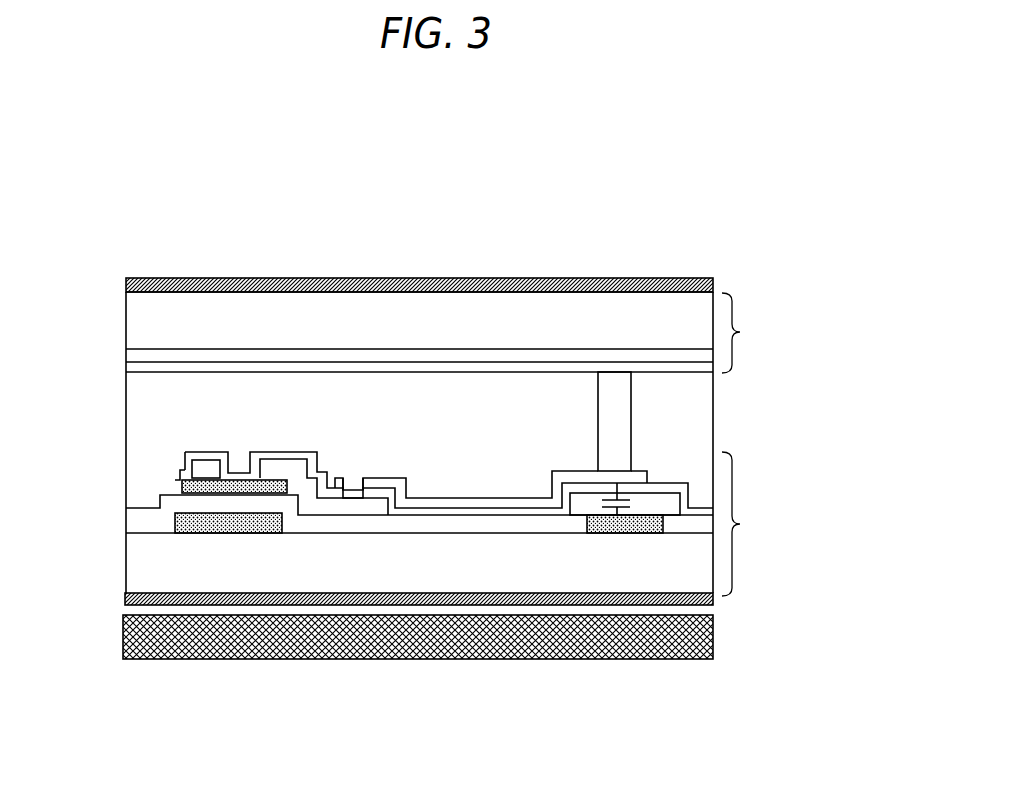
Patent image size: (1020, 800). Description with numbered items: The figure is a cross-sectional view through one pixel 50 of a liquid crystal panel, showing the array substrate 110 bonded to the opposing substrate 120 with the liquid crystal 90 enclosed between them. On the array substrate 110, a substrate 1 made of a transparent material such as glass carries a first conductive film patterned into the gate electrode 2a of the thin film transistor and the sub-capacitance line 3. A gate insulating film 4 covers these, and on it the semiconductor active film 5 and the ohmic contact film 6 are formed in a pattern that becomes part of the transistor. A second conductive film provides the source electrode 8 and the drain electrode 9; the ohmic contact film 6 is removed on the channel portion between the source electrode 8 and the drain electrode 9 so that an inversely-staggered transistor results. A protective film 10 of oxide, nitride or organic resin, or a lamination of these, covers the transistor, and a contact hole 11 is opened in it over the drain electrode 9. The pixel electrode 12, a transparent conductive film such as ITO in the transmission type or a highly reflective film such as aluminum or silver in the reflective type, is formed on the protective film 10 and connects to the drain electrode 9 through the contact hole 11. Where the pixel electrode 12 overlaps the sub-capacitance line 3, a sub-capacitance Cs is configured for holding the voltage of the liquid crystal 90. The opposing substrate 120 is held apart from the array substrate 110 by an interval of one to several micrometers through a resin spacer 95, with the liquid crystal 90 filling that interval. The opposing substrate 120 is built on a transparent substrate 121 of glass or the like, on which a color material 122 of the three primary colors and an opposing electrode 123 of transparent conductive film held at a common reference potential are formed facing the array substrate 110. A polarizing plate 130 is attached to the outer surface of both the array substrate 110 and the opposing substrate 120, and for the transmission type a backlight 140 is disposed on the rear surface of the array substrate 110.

The substrate 1 is at (357, 565).
The gate electrode 2a is at (234, 530).
The sub-capacitance line 3 is at (608, 533).
The gate insulating film 4 is at (148, 523).
The semiconductor active film 5 is at (205, 492).
The ohmic contact film 6 is at (181, 480).
The source electrode 8 is at (196, 462).
The drain electrode 9 is at (257, 453).
The protective film 10 is at (288, 460).
The contact hole 11 is at (356, 480).
The pixel electrode 12 is at (463, 498).
The sub-capacitance Cs is at (617, 499).
The pixel 50 is at (127, 598).
The liquid crystal 90 is at (706, 442).
The resin spacer 95 is at (632, 424).
The array substrate 110 is at (810, 534).
The opposing substrate 120 is at (810, 347).
The transparent substrate 121 is at (240, 334).
The color material 122 is at (343, 356).
The opposing electrode 123 is at (458, 366).
The polarizing plate 130 is at (633, 292).
The backlight 140 is at (688, 630).